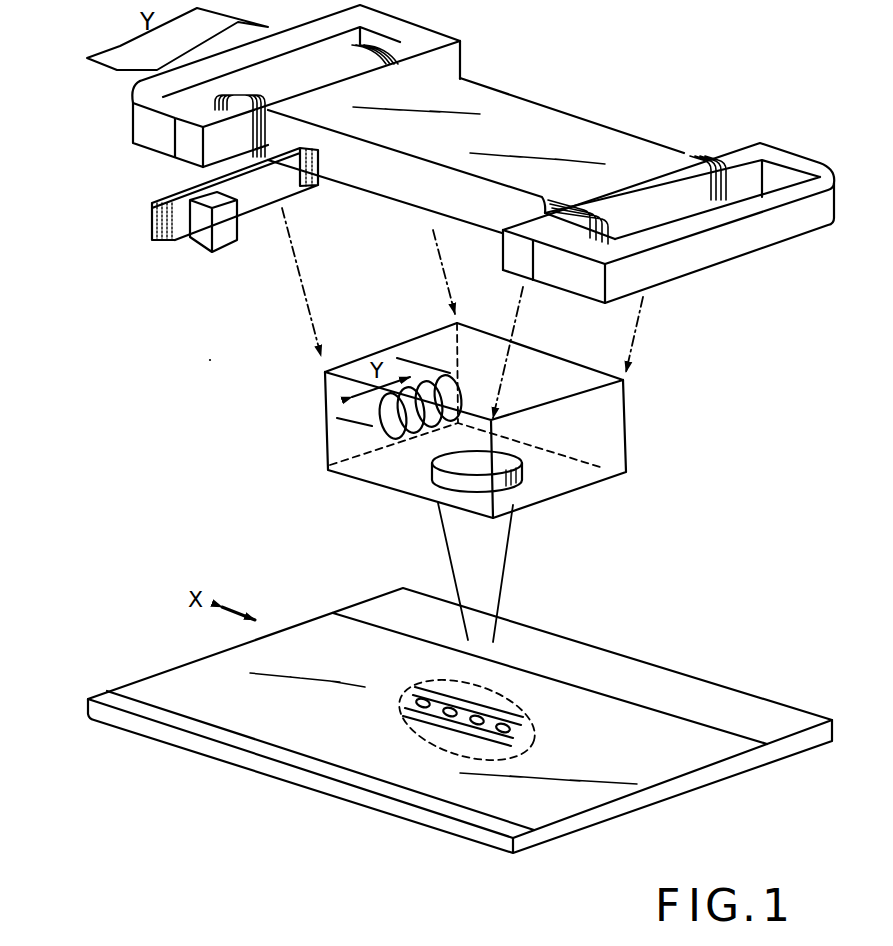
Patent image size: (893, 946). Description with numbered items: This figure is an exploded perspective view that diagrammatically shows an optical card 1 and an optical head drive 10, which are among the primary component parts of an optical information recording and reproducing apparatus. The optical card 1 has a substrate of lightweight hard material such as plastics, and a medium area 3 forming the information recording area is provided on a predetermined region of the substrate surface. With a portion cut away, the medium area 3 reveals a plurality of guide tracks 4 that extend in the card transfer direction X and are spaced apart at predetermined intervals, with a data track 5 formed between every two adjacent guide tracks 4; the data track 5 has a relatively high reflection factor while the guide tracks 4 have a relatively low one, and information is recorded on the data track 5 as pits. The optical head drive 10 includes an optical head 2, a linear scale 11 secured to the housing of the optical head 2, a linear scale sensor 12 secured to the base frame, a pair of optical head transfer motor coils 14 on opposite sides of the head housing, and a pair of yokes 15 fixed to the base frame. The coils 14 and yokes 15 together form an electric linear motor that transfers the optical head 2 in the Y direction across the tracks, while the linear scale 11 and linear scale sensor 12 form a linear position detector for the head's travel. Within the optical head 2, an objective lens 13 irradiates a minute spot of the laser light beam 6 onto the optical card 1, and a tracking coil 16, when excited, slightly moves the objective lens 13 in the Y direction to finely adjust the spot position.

The optical card 1 is at (549, 631).
The optical head 2 is at (563, 106).
The medium area 3 is at (317, 743).
The guide tracks 4 is at (532, 746).
The data track 5 is at (399, 689).
The laser light beam 6 is at (500, 566).
The optical head drive 10 is at (248, 331).
The linear scale 11 is at (285, 187).
The linear scale sensor 12 is at (203, 243).
The objective lens 13 is at (521, 486).
The optical head transfer motor coils 14 is at (347, 58).
The yokes 15 is at (143, 119).
The tracking coil 16 is at (372, 425).